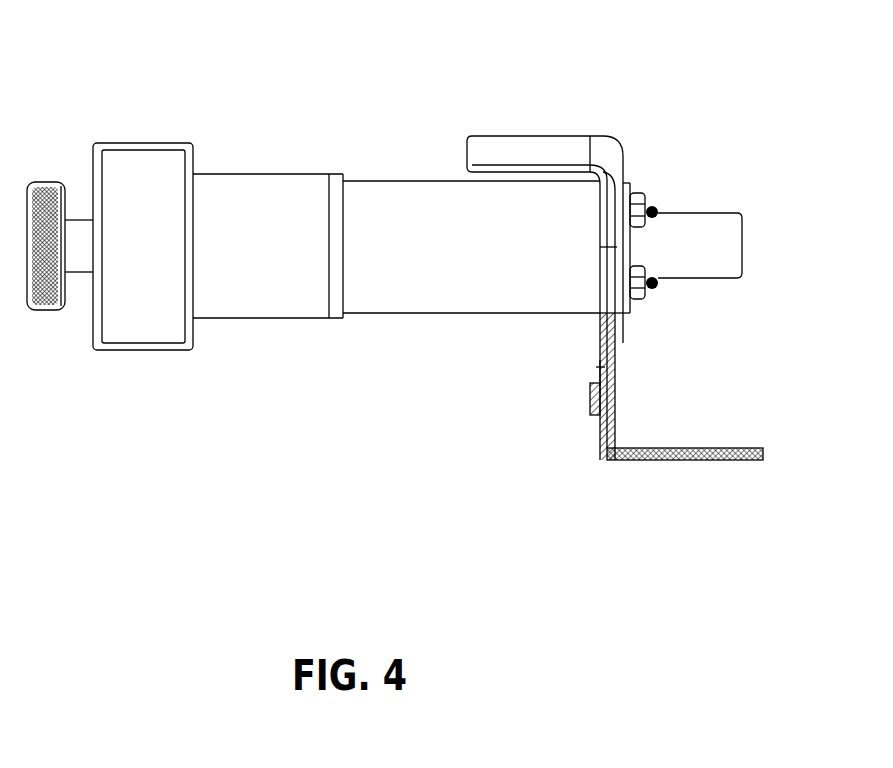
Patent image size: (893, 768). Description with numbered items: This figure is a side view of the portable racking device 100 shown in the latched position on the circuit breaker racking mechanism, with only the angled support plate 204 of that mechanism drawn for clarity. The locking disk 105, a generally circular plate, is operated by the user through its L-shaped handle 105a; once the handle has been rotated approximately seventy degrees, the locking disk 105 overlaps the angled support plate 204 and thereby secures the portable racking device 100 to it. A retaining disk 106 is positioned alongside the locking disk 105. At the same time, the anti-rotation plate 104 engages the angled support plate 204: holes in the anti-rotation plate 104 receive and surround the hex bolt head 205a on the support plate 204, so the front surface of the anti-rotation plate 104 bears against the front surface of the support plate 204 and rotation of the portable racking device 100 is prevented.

The portable racking device 100 is at (262, 343).
The anti-rotation plate 104 is at (598, 372).
The locking disk 105 is at (626, 336).
The L-shaped handle 105a is at (550, 150).
The retaining disk 106 is at (628, 184).
The angled support plate 204 is at (667, 448).
The bolt head 205a is at (590, 400).